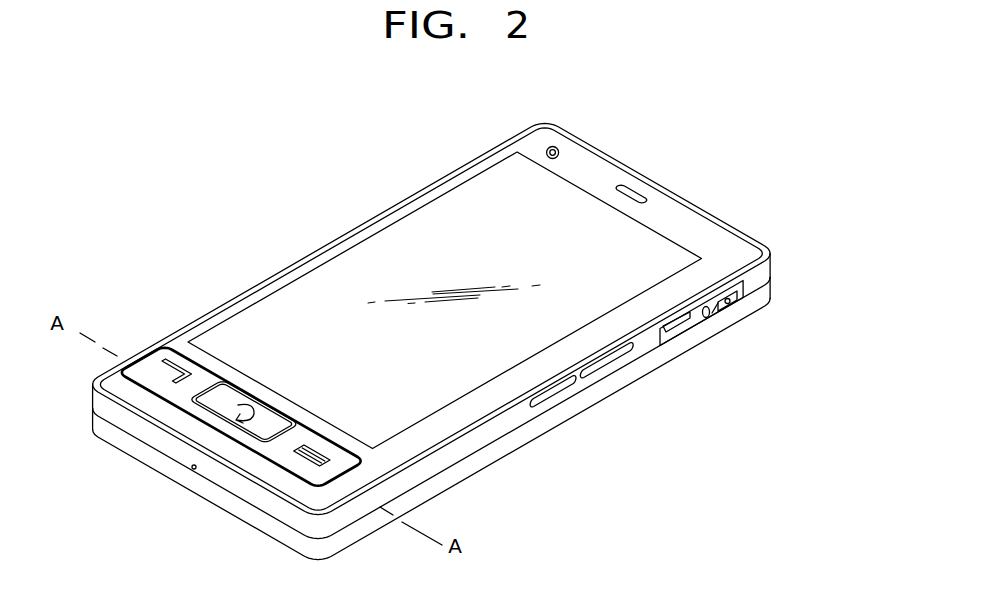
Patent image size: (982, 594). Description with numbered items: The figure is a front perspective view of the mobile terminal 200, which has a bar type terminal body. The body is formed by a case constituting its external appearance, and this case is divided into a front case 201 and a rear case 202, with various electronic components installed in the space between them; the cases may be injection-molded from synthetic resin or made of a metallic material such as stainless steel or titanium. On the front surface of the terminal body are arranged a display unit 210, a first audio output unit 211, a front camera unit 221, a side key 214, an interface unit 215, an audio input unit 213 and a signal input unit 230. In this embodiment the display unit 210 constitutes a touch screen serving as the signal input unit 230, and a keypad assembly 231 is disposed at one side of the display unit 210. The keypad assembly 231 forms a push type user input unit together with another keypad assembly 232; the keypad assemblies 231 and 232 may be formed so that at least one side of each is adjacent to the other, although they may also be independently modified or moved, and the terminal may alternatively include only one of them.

The mobile terminal 200 is at (280, 227).
The front case 201 is at (769, 266).
The rear case 202 is at (762, 293).
The display unit 210 is at (433, 225).
The first audio output unit 211 is at (637, 190).
The audio input unit 213 is at (192, 470).
The side key 214 is at (609, 358).
The interface unit 215 is at (684, 329).
The front camera unit 221 is at (559, 148).
The signal input unit 230 is at (122, 268).
The keypad assembly 231 is at (146, 371).
The keypad assembly 232 is at (218, 397).